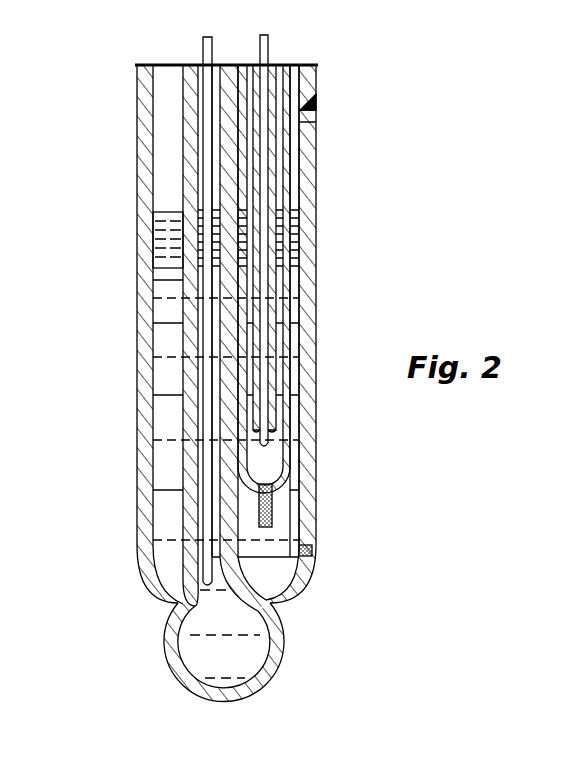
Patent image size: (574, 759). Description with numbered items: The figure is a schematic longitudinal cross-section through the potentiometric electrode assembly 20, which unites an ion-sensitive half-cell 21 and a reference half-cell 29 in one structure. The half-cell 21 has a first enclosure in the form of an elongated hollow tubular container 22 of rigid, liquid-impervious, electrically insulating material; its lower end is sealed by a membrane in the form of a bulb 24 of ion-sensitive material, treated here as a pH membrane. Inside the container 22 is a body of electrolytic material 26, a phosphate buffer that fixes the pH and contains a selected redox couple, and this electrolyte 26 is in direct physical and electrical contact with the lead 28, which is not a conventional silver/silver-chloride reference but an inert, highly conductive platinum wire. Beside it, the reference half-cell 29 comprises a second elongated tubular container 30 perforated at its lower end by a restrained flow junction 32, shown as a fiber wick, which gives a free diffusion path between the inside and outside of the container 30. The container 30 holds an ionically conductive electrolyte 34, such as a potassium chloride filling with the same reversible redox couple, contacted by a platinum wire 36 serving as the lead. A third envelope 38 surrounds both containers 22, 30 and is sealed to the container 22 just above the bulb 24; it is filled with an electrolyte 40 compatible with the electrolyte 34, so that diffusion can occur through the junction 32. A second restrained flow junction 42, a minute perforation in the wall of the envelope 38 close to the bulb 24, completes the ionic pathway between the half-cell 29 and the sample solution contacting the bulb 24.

The potentiometric electrode assembly 20 is at (318, 198).
The half-cell 21 is at (179, 283).
The hollow tubular container 22 is at (182, 470).
The bulb 24 is at (282, 660).
The electrolytic material 26 is at (198, 648).
The lead 28 is at (206, 50).
The half-cell 29 is at (292, 342).
The hollow tubular container 30 is at (292, 407).
The restrained flow junction 32 is at (273, 517).
The electrolyte 34 is at (273, 275).
The platinum wire 36 is at (272, 52).
The envelope 38 is at (317, 142).
The electrolyte 40 is at (163, 365).
The restrained flow junction 42 is at (312, 552).